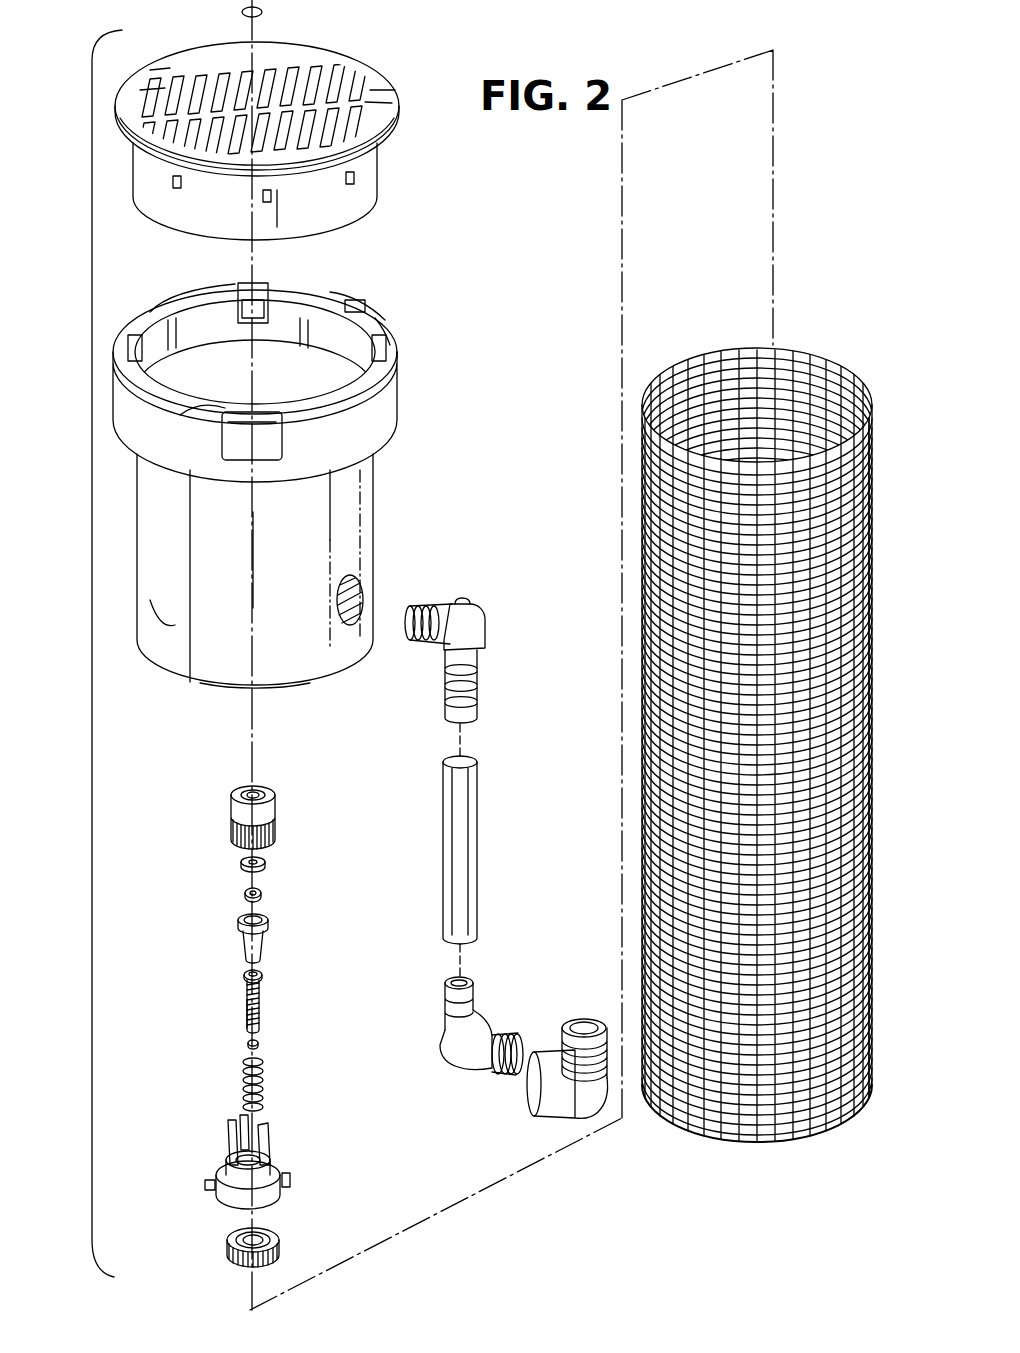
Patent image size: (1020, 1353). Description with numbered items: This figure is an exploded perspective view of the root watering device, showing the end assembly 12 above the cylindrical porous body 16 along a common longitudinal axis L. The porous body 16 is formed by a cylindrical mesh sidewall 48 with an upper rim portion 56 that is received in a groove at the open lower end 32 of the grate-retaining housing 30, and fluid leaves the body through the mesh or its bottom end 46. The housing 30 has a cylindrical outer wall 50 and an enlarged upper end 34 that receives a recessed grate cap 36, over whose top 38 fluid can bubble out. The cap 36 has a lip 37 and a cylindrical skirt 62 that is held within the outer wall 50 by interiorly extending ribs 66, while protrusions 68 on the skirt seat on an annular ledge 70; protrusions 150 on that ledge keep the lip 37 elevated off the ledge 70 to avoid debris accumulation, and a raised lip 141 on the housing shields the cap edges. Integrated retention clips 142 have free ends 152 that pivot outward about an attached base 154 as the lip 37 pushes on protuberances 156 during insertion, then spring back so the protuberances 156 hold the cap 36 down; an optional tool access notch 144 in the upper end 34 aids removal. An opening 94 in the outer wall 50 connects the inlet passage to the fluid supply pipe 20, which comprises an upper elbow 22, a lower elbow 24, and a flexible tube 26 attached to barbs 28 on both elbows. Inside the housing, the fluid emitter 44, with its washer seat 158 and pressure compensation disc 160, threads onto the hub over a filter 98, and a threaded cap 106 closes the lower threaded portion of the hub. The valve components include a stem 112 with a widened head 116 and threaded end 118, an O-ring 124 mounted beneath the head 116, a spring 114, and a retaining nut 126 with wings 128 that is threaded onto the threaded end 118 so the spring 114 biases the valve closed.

The end assembly 12 is at (92, 552).
The longitudinal axis L is at (262, 13).
The cylindrical porous body 16 is at (860, 985).
The fluid supply pipe 20 is at (478, 835).
The upper elbow 22 is at (470, 612).
The lower elbow 24 is at (490, 1035).
The flexible tube 26 is at (462, 900).
The barbs 28 is at (475, 990).
The grate-retaining housing 30 is at (160, 565).
The open lower end 32 is at (215, 680).
The upper end 34 is at (398, 395).
The grate cap 36 is at (378, 88).
The lip 37 is at (395, 128).
The top 38 is at (330, 70).
The fluid emitter 44 is at (280, 795).
The bottom end 46 is at (812, 1135).
The cylindrical mesh sidewall 48 is at (873, 467).
The cylindrical outer wall 50 is at (177, 625).
The upper rim portion 56 is at (800, 352).
The cylindrical skirt 62 is at (375, 188).
The ribs 66 is at (190, 355).
The protrusions 68 is at (350, 180).
The annular ledge 70 is at (400, 330).
The opening 94 is at (360, 590).
The filter 98 is at (270, 920).
The threaded cap 106 is at (280, 1243).
The stem 112 is at (262, 1015).
The spring 114 is at (265, 1095).
The head 116 is at (262, 978).
The threaded end 118 is at (247, 1010).
The O-ring 124 is at (258, 1045).
The retaining nut 126 is at (225, 1170).
The wings 128 is at (290, 1175).
The raised lip 141 is at (210, 415).
The retention clips 142 is at (300, 445).
The tool access notch 144 is at (372, 278).
The protrusions 150 is at (372, 352).
The free ends 152 is at (240, 285).
The attached base 154 is at (355, 305).
The protuberances 156 is at (268, 292).
The washer seat 158 is at (265, 862).
The pressure compensation disc 160 is at (262, 893).